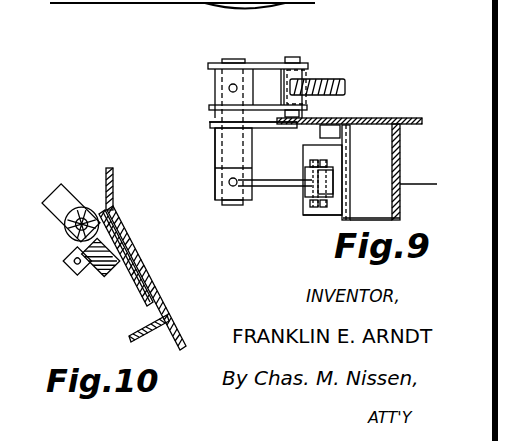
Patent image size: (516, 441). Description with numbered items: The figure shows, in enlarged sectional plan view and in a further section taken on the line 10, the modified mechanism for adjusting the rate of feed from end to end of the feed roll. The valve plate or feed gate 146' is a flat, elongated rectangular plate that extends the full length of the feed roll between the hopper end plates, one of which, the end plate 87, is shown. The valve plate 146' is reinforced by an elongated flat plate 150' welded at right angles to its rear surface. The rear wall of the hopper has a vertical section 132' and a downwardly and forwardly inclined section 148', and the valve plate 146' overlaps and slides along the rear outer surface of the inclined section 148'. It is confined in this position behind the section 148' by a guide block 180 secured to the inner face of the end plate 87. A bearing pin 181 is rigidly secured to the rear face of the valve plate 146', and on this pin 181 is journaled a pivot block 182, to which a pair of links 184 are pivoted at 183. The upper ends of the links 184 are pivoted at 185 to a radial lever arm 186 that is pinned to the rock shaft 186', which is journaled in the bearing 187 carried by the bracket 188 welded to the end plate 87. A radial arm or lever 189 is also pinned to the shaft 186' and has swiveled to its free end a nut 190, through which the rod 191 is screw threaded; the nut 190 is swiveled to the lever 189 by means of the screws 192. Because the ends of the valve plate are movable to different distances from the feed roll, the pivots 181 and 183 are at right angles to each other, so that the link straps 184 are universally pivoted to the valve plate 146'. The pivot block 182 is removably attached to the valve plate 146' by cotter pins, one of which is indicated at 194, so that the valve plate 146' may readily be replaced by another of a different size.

In FIG. 9, the section line 10 is at (428, 184).
In FIG. 9, the end plate 87 is at (410, 120).
In FIG. 9, the vertical section of rear wall 132' is at (422, 172).
In FIG. 10, the vertical section of rear wall 132' is at (146, 257).
In FIG. 9, the valve plate 146' is at (368, 172).
In FIG. 10, the valve plate 146' is at (152, 258).
In FIG. 10, the inclined section of rear wall 148' is at (141, 248).
In FIG. 9, the reinforcing flat plate 150' is at (305, 236).
In FIG. 10, the reinforcing flat plate 150' is at (124, 323).
In FIG. 9, the guide block 180 is at (336, 130).
In FIG. 10, the bearing pin 181 is at (78, 268).
In FIG. 9, the pivot block 182 is at (322, 187).
In FIG. 10, the pivot block 182 is at (98, 270).
In FIG. 9, the pivot 183 is at (320, 165).
In FIG. 10, the pivot 183 is at (68, 232).
In FIG. 9, the links 184 is at (305, 165).
In FIG. 10, the links 184 is at (74, 198).
In FIG. 9, the pivot 185 is at (316, 209).
In FIG. 9, the radial lever arm 186 is at (275, 168).
In FIG. 9, the rock shaft 186' is at (219, 41).
In FIG. 9, the bearing 187 is at (216, 143).
In FIG. 9, the bracket 188 is at (210, 125).
In FIG. 9, the radial arm or lever 189 is at (270, 60).
In FIG. 9, the nut 190 is at (312, 64).
In FIG. 9, the rod 191 is at (350, 80).
In FIG. 9, the screws 192 is at (294, 57).
In FIG. 10, the cotter pin 194 is at (72, 258).